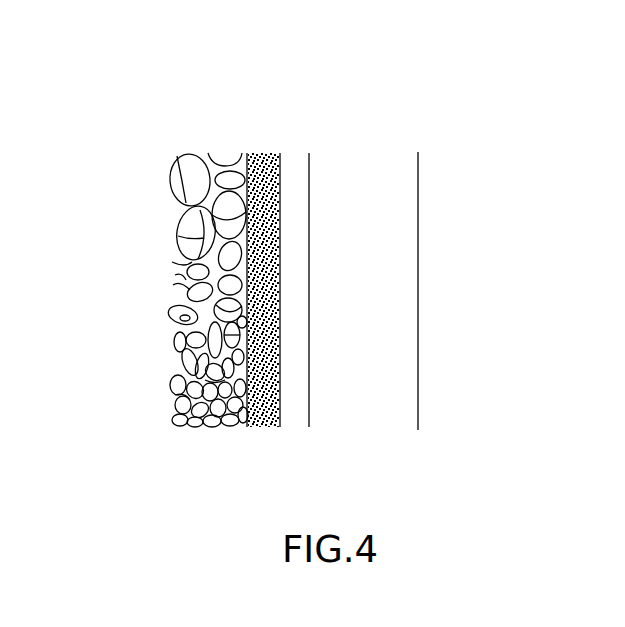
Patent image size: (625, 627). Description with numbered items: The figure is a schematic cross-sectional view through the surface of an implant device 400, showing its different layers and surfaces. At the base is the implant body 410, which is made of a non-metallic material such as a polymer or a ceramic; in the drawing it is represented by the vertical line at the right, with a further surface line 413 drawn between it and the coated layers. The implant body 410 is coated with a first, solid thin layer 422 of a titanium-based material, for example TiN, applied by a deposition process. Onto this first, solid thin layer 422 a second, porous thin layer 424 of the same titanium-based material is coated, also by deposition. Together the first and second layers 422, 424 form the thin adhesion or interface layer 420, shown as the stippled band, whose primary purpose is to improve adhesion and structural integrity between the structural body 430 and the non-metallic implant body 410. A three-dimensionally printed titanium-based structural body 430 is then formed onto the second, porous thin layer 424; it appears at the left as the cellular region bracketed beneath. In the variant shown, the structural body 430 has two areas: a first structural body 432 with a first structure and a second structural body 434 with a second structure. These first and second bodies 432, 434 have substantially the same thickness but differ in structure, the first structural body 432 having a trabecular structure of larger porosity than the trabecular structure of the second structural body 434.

The implant device 400 is at (157, 117).
The implant body 410 is at (386, 190).
The separator 413 is at (309, 357).
The interface layer 420 is at (375, 324).
The first, solid thin layer 422 is at (295, 244).
The second, porous thin layer 424 is at (280, 305).
The structural body 430 is at (159, 323).
The first structural body 432 is at (200, 236).
The second structural body 434 is at (200, 378).